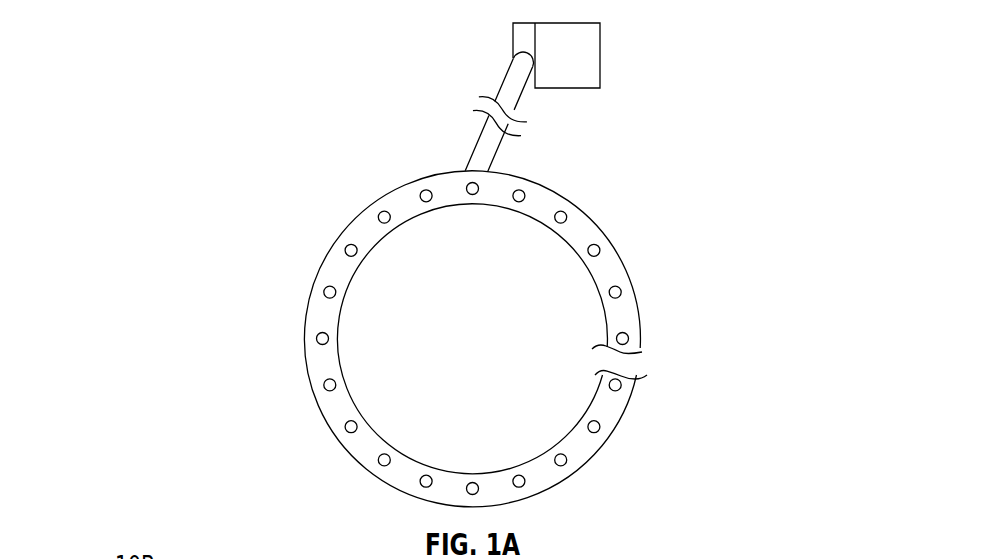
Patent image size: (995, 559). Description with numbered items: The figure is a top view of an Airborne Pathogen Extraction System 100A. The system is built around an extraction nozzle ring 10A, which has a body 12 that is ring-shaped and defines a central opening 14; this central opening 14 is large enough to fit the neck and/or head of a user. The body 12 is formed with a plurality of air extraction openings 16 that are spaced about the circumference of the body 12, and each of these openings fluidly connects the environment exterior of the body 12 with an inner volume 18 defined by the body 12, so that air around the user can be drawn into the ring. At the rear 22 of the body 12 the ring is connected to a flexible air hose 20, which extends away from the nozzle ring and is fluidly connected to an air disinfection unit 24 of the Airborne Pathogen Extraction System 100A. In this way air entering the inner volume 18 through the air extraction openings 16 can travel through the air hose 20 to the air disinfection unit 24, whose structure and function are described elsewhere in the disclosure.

The Airborne Pathogen Extraction System 100A is at (142, 33).
The extraction nozzle ring 10A is at (191, 171).
The body 12 is at (305, 337).
The central opening 14 is at (355, 323).
The air extraction openings 16 is at (343, 425).
The inner volume 18 is at (623, 370).
The flexible air hose 20 is at (500, 145).
The rear 22 is at (447, 162).
The air disinfection unit 24 is at (602, 55).